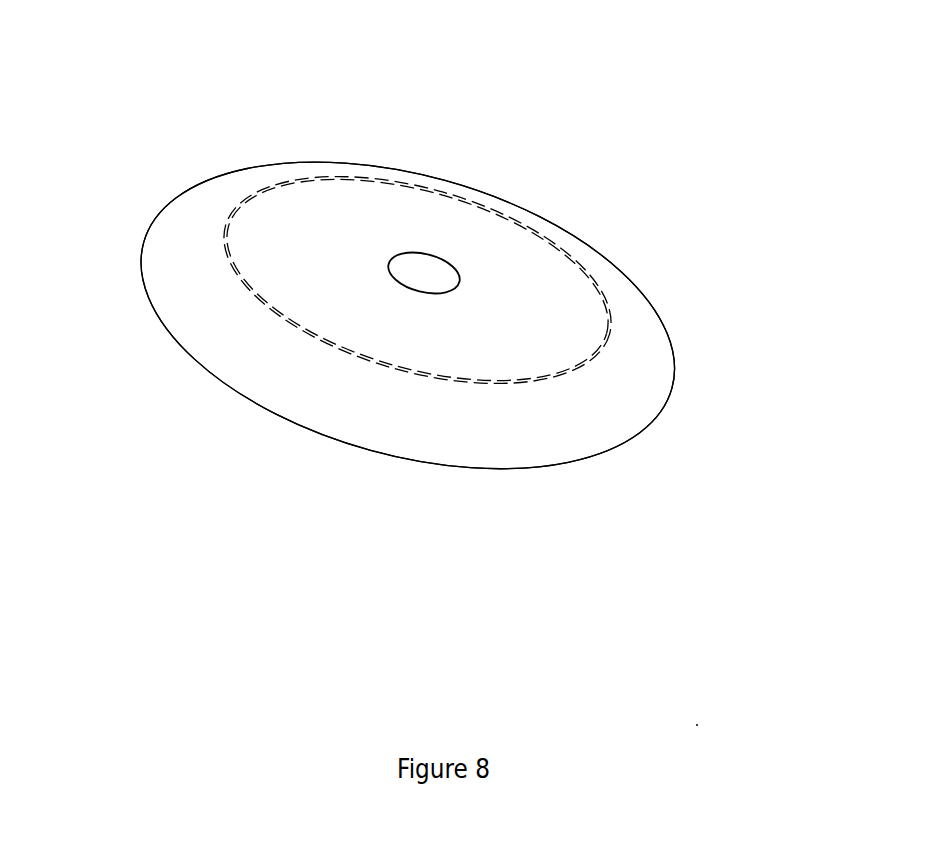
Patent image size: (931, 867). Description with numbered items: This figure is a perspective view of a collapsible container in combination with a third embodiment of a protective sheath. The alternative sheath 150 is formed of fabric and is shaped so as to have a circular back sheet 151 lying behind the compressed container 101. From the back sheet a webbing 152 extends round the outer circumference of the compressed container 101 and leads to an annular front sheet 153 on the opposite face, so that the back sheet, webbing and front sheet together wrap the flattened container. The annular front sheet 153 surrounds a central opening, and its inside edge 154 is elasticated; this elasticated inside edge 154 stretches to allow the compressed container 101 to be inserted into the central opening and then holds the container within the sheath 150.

The sheath 150 is at (251, 125).
The circular back sheet 151 is at (248, 408).
The webbing 152 is at (612, 405).
The annular front sheet 153 is at (345, 178).
The inside edge 154 is at (485, 207).
The compressed container 101 is at (507, 298).